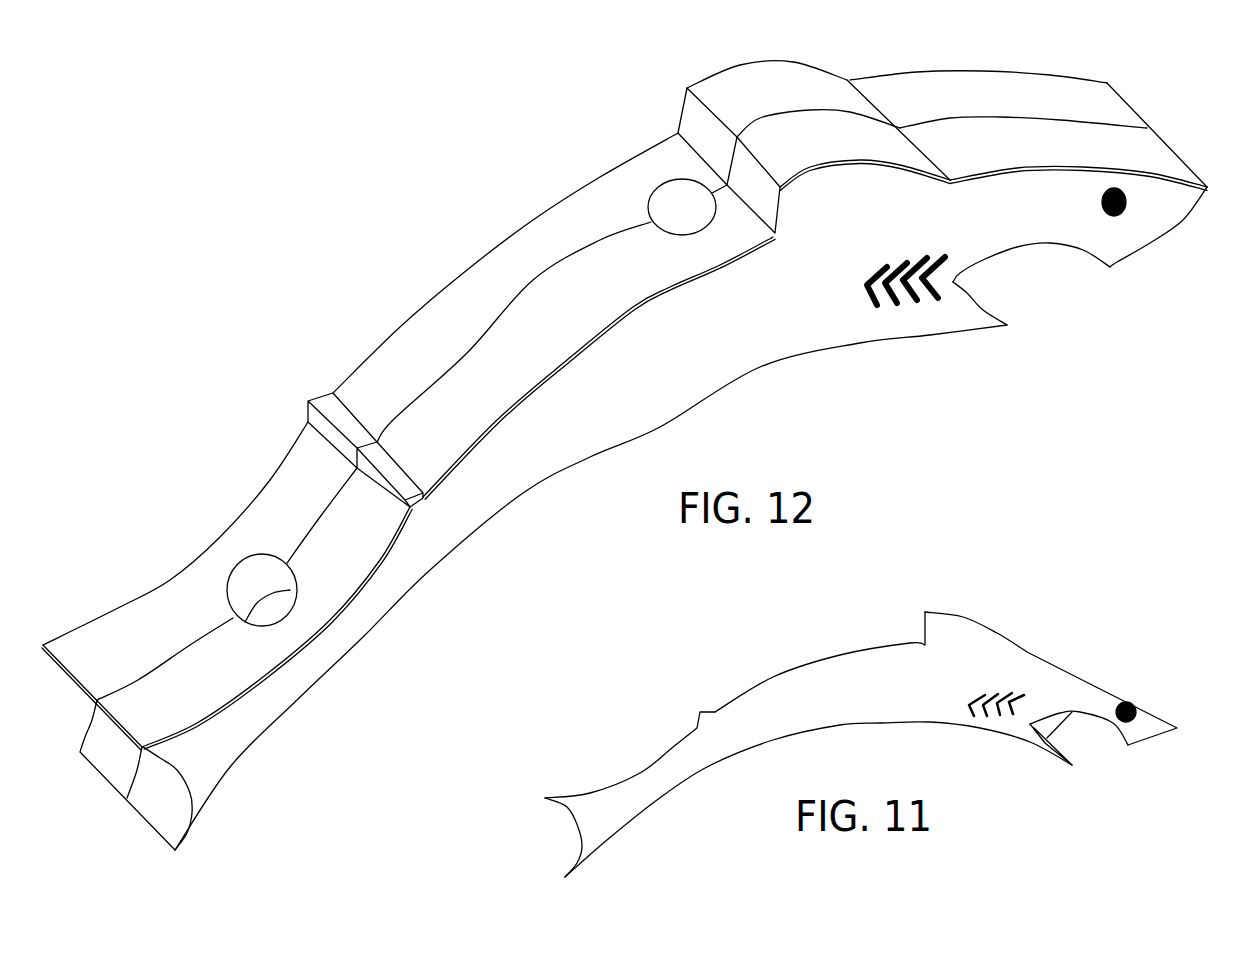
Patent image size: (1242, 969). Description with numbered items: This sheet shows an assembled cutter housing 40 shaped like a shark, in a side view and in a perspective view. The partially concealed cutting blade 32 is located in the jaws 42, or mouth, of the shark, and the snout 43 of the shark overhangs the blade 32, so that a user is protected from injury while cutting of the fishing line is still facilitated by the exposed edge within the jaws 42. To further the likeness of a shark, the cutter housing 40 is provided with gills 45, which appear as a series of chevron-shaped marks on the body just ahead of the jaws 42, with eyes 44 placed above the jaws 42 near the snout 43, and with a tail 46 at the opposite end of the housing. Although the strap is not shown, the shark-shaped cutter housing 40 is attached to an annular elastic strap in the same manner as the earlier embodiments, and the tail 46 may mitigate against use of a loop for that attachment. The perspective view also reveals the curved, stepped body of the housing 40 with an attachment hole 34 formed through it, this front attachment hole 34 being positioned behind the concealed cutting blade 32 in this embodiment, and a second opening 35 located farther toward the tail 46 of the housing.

In FIG. 12, the cutter housing 40 is at (404, 250).
In FIG. 11, the cutter housing 40 is at (710, 680).
In FIG. 12, the snout 43 is at (1080, 98).
In FIG. 11, the snout 43 is at (1152, 720).
In FIG. 12, the eyes 44 is at (1113, 216).
In FIG. 12, the jaws 42 is at (955, 285).
In FIG. 12, the gills 45 is at (913, 303).
In FIG. 11, the gills 45 is at (990, 717).
In FIG. 12, the front attachment hole 34 is at (675, 203).
In FIG. 12, the lower aperture 35 is at (245, 592).
In FIG. 12, the tail 46 is at (290, 680).
In FIG. 11, the tail 46 is at (668, 767).
In FIG. 11, the cutting blade 32 is at (1047, 723).